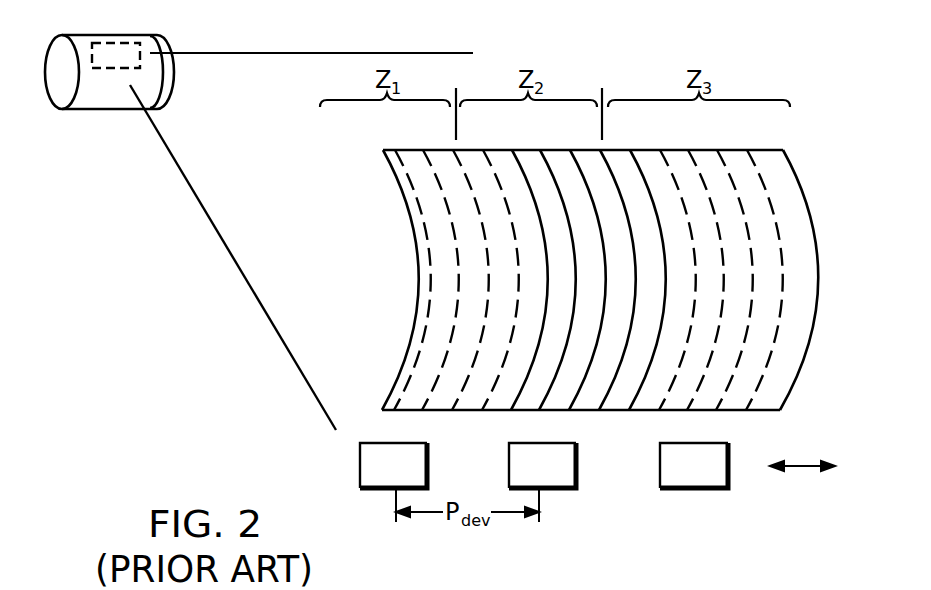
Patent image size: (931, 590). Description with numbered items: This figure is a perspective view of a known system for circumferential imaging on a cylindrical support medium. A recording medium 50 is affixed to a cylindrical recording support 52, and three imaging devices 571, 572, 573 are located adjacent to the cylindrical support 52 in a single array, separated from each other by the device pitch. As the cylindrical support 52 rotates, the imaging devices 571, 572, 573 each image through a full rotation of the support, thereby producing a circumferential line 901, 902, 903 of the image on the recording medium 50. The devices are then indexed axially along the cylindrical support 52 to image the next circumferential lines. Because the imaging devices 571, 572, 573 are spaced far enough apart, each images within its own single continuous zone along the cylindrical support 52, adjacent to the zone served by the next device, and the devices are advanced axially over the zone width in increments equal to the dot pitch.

The recording medium 50 is at (112, 35).
The cylindrical recording support 52 is at (68, 109).
The line of the image 901 is at (397, 150).
The line of the image 902 is at (483, 150).
The line of the image 903 is at (660, 150).
The imaging device 571 is at (362, 482).
The imaging device 572 is at (577, 483).
The imaging device 573 is at (729, 483).